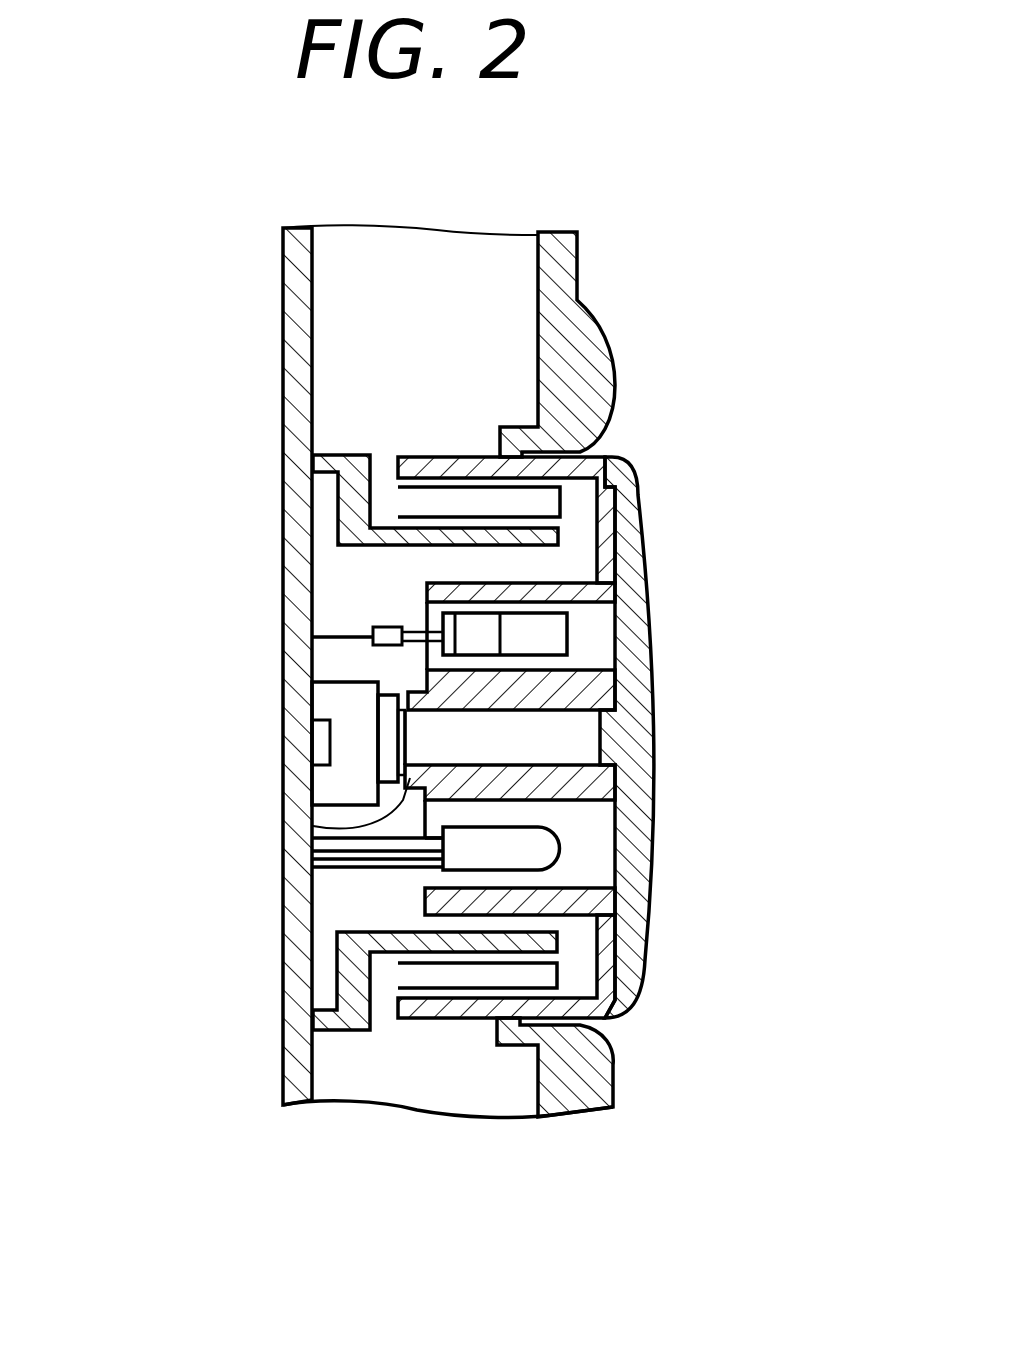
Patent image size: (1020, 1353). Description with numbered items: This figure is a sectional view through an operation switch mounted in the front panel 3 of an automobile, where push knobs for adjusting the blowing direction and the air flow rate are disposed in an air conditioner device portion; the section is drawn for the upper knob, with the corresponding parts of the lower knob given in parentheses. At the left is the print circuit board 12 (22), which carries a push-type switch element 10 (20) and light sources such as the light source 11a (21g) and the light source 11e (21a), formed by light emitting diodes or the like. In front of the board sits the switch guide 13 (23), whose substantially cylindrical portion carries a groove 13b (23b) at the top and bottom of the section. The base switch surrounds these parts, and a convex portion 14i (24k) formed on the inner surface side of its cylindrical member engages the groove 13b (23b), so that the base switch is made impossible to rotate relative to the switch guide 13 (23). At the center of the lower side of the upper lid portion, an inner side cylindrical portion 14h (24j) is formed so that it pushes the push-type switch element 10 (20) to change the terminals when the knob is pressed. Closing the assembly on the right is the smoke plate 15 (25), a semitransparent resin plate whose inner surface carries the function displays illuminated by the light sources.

The front panel 3 is at (613, 357).
The push-type switch element 10 is at (232, 743).
The push-type switch element 20 is at (335, 700).
The light source 11a is at (593, 634).
The light source 21g is at (548, 635).
The light source 11e is at (594, 857).
The light source 21a is at (552, 850).
The print circuit board 12 is at (345, 671).
The print circuit board 22 is at (300, 300).
The switch guide 13 is at (443, 906).
The switch guide 23 is at (350, 1033).
The groove 13b is at (439, 682).
The groove 23b is at (388, 505).
The inner side cylindrical portion 14h is at (227, 810).
The inner side cylindrical portion 24j is at (313, 826).
The convex portion 14i is at (631, 778).
The convex portion 24k is at (577, 498).
The smoke plate 15 is at (719, 737).
The smoke plate 25 is at (638, 737).